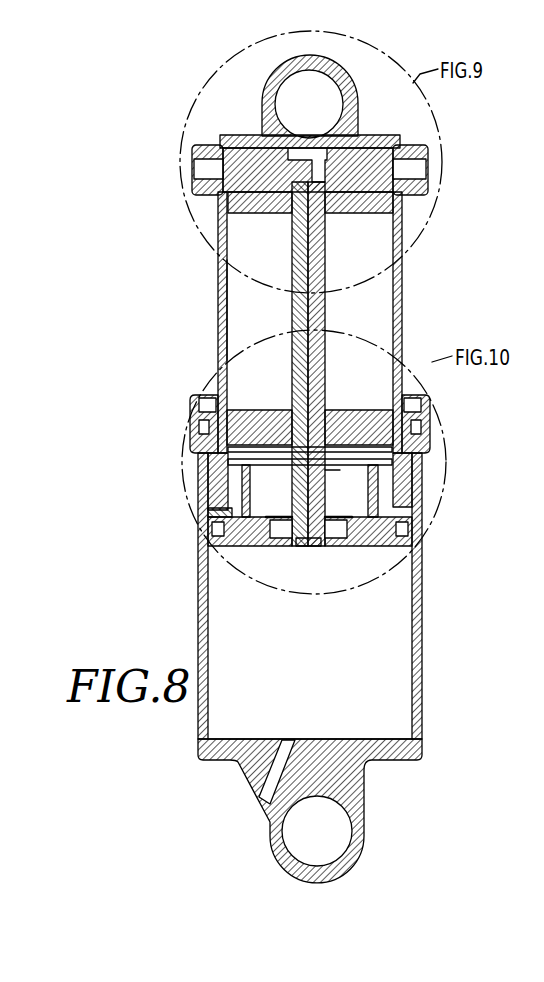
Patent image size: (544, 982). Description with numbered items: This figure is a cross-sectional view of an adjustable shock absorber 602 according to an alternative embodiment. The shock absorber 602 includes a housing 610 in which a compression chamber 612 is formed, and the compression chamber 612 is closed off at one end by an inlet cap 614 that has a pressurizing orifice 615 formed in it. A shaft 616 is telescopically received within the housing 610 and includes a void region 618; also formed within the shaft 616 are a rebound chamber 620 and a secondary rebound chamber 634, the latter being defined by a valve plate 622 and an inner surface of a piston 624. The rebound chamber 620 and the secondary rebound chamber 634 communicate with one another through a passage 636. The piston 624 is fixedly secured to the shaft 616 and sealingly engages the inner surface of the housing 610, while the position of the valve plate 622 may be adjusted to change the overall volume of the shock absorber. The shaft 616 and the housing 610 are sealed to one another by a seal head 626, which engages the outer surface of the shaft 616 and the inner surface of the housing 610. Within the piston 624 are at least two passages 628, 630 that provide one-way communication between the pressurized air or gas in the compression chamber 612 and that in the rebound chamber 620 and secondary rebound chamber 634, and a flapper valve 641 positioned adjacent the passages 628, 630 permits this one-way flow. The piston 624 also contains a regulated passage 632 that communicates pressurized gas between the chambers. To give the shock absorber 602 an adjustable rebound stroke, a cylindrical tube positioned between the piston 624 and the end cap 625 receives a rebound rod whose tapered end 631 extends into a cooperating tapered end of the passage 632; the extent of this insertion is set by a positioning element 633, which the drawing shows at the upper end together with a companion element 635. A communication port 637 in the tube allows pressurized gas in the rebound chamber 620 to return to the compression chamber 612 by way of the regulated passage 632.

The shock absorber 602 is at (442, 641).
The housing 610 is at (417, 613).
The compression chamber 612 is at (396, 698).
The inlet cap 614 is at (355, 792).
The pressurizing orifice 615 is at (260, 796).
The shaft 616 is at (220, 272).
The void region 618 is at (240, 312).
The rebound chamber 620 is at (414, 535).
The valve plate 622 is at (290, 410).
The piston 624 is at (208, 553).
The end cap 625 is at (282, 70).
The seal head 626 is at (190, 422).
The passage 628 is at (291, 546).
The passage 630 is at (330, 546).
The tapered end 631 is at (335, 485).
The passage 632 is at (313, 547).
The positioning element 633 is at (195, 146).
The secondary rebound chamber 634 is at (207, 508).
The right boss 635 is at (418, 195).
The passage 636 is at (212, 518).
The communication port 637 is at (327, 473).
The flapper valve 641 is at (252, 497).